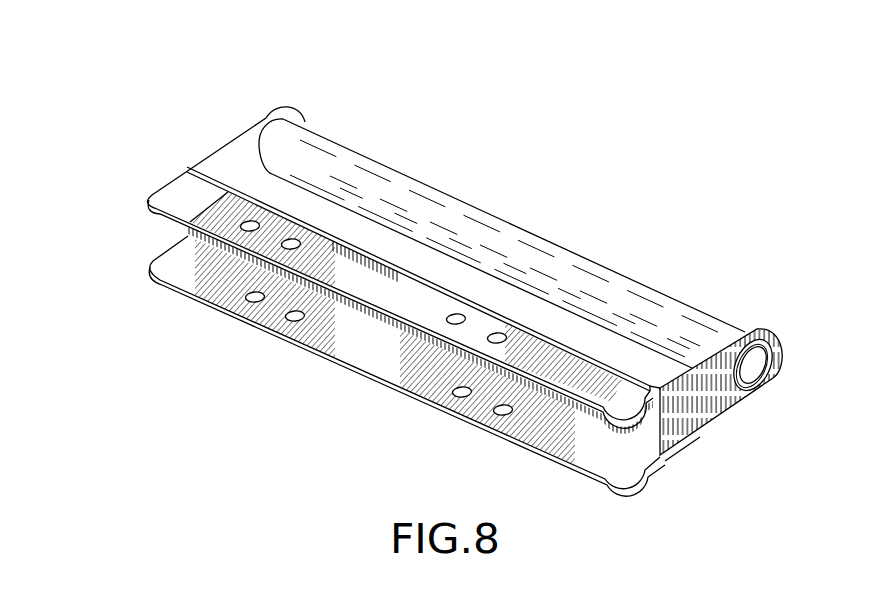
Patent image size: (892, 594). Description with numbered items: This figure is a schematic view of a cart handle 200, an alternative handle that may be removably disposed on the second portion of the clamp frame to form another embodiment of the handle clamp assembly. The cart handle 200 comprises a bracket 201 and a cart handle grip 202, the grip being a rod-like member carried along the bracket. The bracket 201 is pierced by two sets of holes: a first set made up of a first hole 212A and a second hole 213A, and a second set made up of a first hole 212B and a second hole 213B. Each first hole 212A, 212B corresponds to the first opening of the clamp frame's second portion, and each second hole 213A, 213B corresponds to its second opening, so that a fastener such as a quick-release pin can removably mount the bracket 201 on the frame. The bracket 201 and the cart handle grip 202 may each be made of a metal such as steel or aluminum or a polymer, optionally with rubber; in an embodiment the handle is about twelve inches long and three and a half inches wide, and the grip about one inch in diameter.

The cart handle 200 is at (168, 78).
The bracket 201 is at (609, 486).
The cart handle grip 202 is at (339, 146).
The first hole of the first set 212A is at (246, 299).
The first hole of the second set 212B is at (289, 321).
The second hole of the first set 213A is at (453, 395).
The second hole of the second set 213B is at (495, 415).